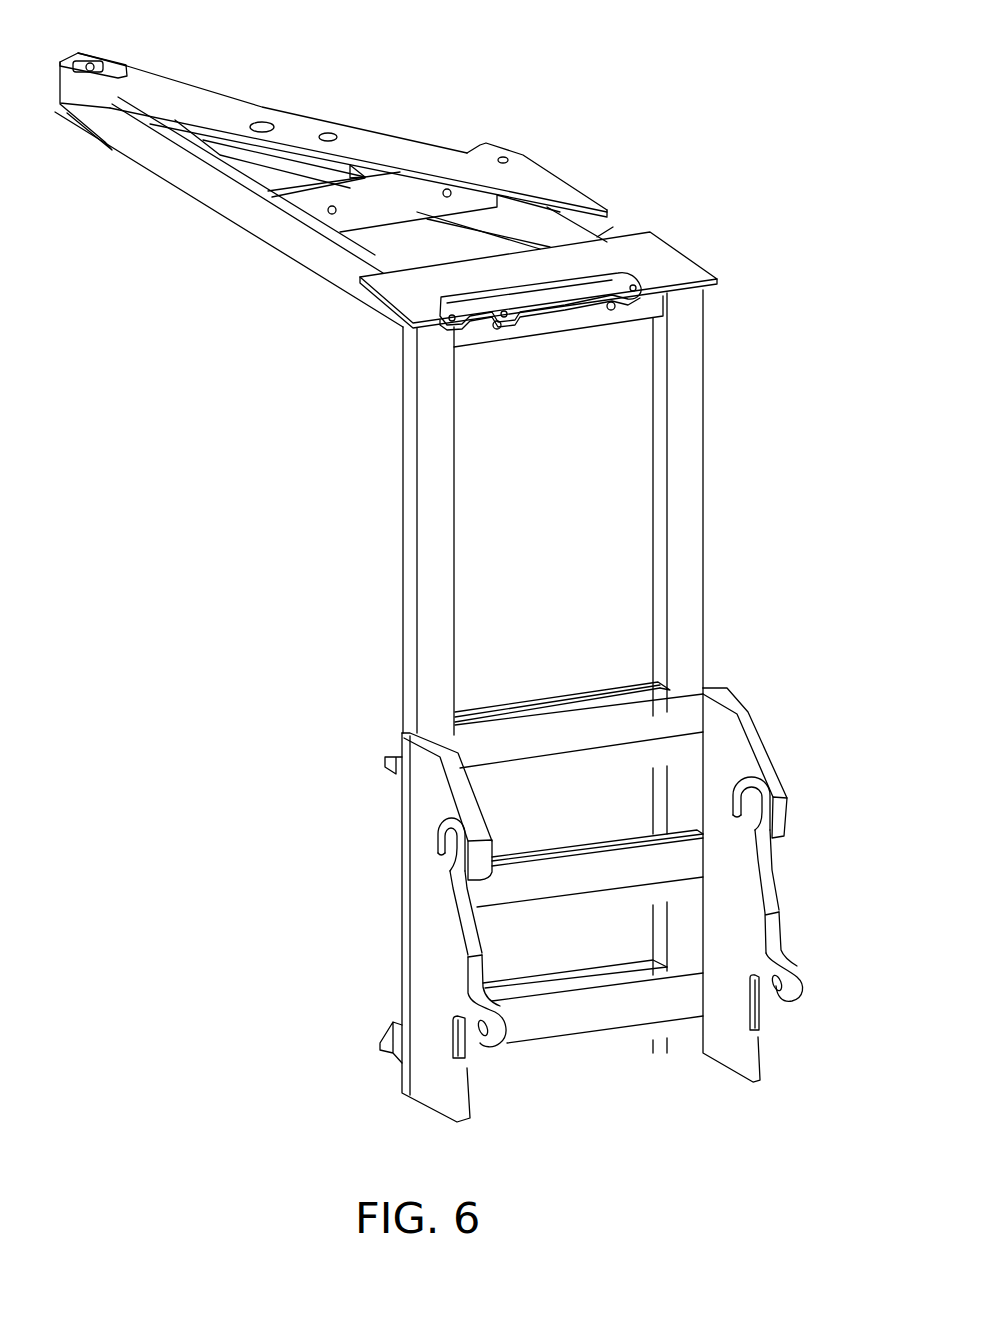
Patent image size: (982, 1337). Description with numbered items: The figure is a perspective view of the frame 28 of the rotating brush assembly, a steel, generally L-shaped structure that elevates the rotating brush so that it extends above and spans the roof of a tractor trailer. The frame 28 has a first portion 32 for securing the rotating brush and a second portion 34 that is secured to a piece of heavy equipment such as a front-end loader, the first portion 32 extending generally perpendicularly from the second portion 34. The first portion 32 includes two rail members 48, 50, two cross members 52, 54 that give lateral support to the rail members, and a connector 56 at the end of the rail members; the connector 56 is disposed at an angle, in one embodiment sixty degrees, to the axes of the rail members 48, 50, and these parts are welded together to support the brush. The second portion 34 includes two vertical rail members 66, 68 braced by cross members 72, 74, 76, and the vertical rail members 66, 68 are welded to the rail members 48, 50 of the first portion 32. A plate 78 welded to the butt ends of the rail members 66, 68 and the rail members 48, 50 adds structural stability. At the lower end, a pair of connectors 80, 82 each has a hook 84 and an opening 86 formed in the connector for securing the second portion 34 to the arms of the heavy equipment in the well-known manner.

The frame 28 is at (392, 528).
The first portion 32 is at (255, 240).
The second portion 34 is at (703, 532).
The rail member 48 is at (190, 176).
The rail member 50 is at (610, 222).
The cross member 52 is at (280, 170).
The cross member 54 is at (383, 198).
The connector 56 is at (202, 93).
The vertical rail member 66 is at (432, 636).
The vertical rail member 68 is at (686, 378).
The cross member 72 is at (548, 735).
The cross member 74 is at (562, 875).
The cross member 76 is at (605, 1012).
The plate 78 is at (684, 268).
The connector 80 is at (432, 960).
The connector 82 is at (728, 920).
The hook 84 is at (452, 863).
The opening 86 is at (480, 1045).